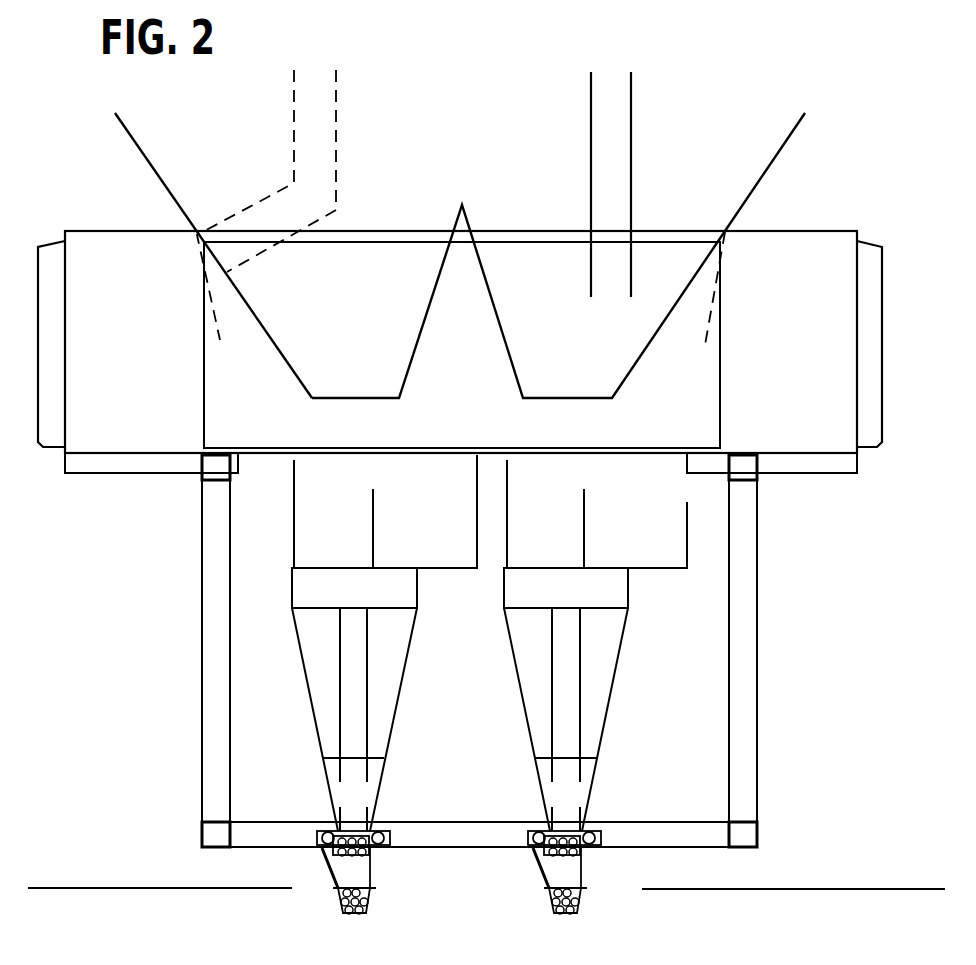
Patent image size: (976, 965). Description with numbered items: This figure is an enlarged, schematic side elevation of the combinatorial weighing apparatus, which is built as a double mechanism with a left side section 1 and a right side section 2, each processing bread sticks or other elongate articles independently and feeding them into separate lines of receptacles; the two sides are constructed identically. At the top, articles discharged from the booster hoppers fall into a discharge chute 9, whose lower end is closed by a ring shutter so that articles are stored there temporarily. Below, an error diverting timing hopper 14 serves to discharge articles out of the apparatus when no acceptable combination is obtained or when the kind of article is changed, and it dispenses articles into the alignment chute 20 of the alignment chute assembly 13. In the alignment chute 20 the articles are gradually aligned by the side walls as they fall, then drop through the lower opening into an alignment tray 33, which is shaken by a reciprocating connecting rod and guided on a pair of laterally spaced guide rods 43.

The left side section 1 is at (190, 664).
The right side section 2 is at (768, 655).
The discharge chute 9 is at (148, 178).
The alignment chute assembly 13 is at (295, 748).
The error diverting timing hopper 14 is at (325, 520).
The alignment chute 20 is at (305, 689).
The alignment tray 33 is at (363, 862).
The guide rods 43 is at (318, 852).